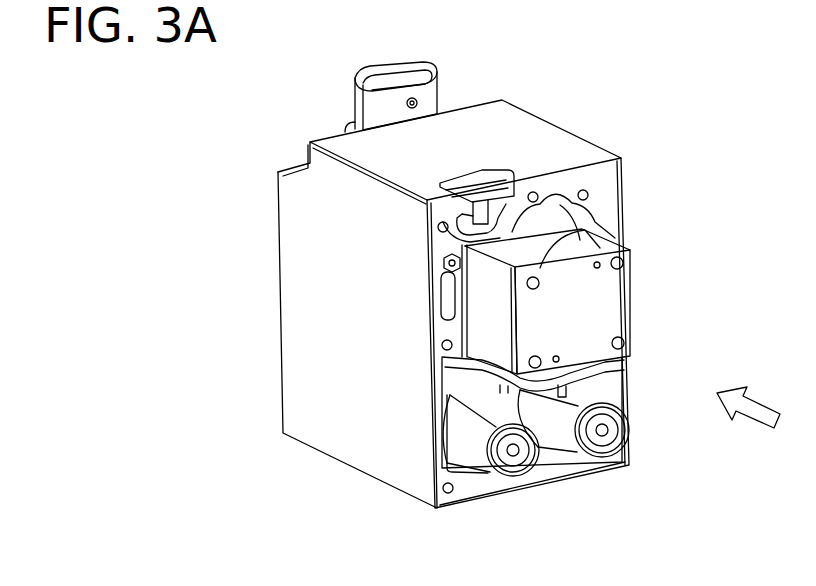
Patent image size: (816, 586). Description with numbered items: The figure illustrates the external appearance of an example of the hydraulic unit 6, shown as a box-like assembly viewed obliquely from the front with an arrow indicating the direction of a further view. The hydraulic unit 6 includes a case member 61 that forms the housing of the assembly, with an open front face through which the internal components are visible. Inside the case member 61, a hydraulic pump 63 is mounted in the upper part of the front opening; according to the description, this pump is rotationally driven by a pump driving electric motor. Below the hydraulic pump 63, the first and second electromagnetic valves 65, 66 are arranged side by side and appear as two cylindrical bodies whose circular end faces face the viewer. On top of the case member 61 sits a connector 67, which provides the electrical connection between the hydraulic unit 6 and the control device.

The hydraulic unit 6 is at (281, 84).
The case member 61 is at (525, 135).
The hydraulic pump 63 is at (587, 315).
The first electromagnetic valve 65 is at (477, 458).
The second electromagnetic valve 66 is at (568, 440).
The connector 67 is at (384, 66).